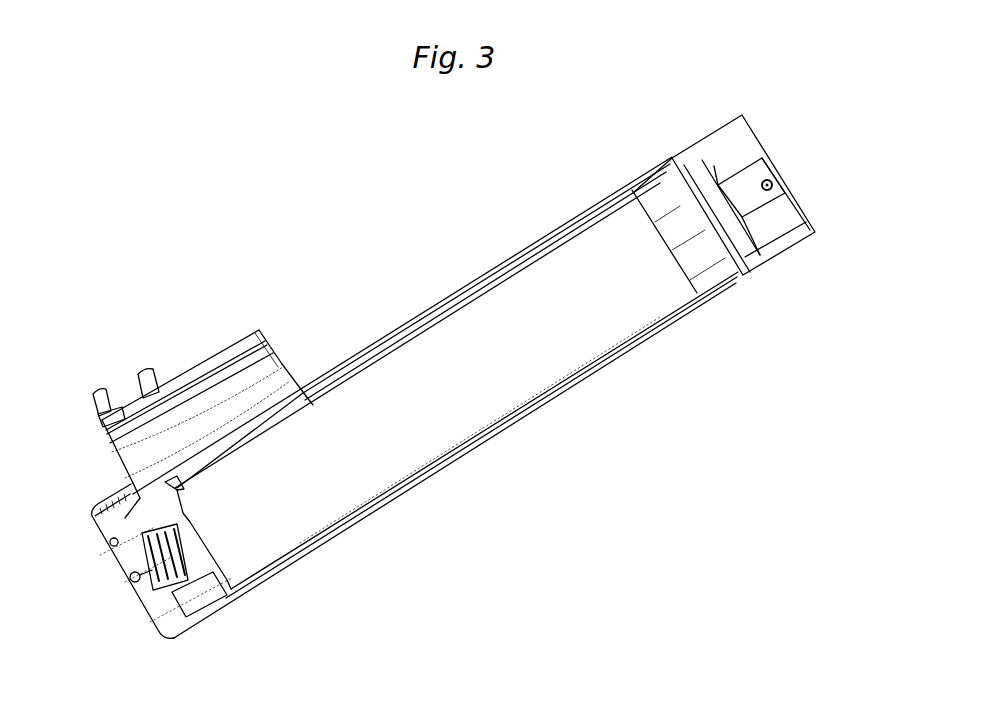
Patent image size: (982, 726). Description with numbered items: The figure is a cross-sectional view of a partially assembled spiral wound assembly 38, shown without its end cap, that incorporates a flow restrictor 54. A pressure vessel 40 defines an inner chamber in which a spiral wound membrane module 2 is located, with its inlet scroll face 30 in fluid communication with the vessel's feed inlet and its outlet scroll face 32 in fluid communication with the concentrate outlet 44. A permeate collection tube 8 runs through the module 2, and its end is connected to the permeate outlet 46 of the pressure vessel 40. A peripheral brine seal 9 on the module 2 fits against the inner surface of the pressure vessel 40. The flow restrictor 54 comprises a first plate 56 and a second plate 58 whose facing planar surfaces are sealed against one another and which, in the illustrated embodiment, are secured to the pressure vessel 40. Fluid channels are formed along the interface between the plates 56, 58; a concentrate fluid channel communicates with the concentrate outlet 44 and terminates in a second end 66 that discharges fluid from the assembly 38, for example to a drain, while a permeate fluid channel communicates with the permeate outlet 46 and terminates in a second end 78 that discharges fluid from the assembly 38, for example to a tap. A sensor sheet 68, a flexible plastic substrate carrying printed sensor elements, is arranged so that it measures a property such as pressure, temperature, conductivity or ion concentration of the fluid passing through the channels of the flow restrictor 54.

The spiral wound membrane module 2 is at (562, 268).
The permeate collection tube 8 is at (197, 550).
The peripheral brine seal 9 is at (738, 276).
The inlet scroll face 30 is at (713, 164).
The outlet scroll face 32 is at (182, 513).
The spiral wound assembly 38 is at (458, 262).
The pressure vessel 40 is at (482, 443).
The concentrate outlet 44 is at (110, 541).
The permeate outlet 46 is at (137, 578).
The flow restrictor 54 is at (211, 316).
The first plate 56 is at (289, 371).
The second plate 58 is at (258, 328).
The second end of concentrate fluid channel 66 is at (100, 391).
The sensor sheet 68 is at (268, 342).
The second end of permeate fluid channel 78 is at (145, 362).